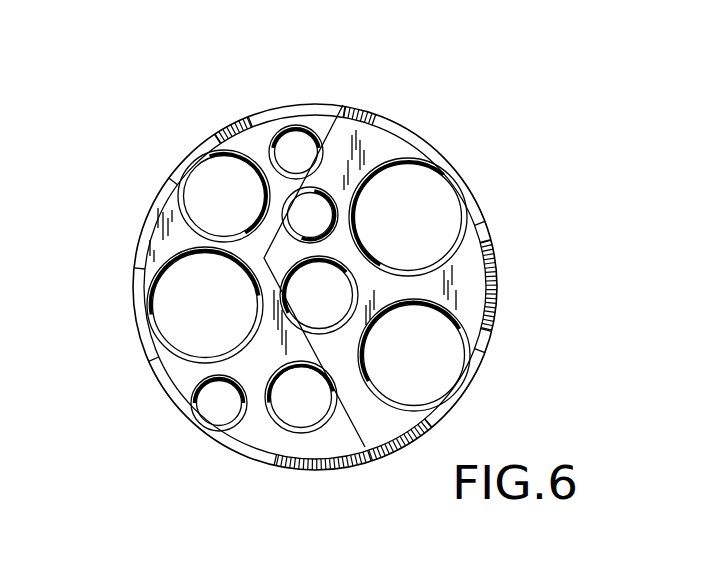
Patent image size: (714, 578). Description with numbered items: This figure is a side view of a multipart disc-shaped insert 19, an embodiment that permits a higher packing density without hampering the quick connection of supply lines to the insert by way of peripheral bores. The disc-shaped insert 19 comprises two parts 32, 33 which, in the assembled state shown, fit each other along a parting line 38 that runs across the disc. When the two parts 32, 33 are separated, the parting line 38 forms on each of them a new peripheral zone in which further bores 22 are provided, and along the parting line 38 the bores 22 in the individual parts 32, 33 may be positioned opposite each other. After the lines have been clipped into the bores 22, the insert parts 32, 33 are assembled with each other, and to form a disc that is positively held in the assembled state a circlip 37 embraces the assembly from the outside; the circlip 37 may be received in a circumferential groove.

The disc-shaped insert 19 is at (140, 150).
The bores 22 is at (297, 137).
The insert part 32 is at (173, 222).
The insert part 33 is at (378, 145).
The circlip 37 is at (435, 410).
The parting line 38 is at (378, 442).